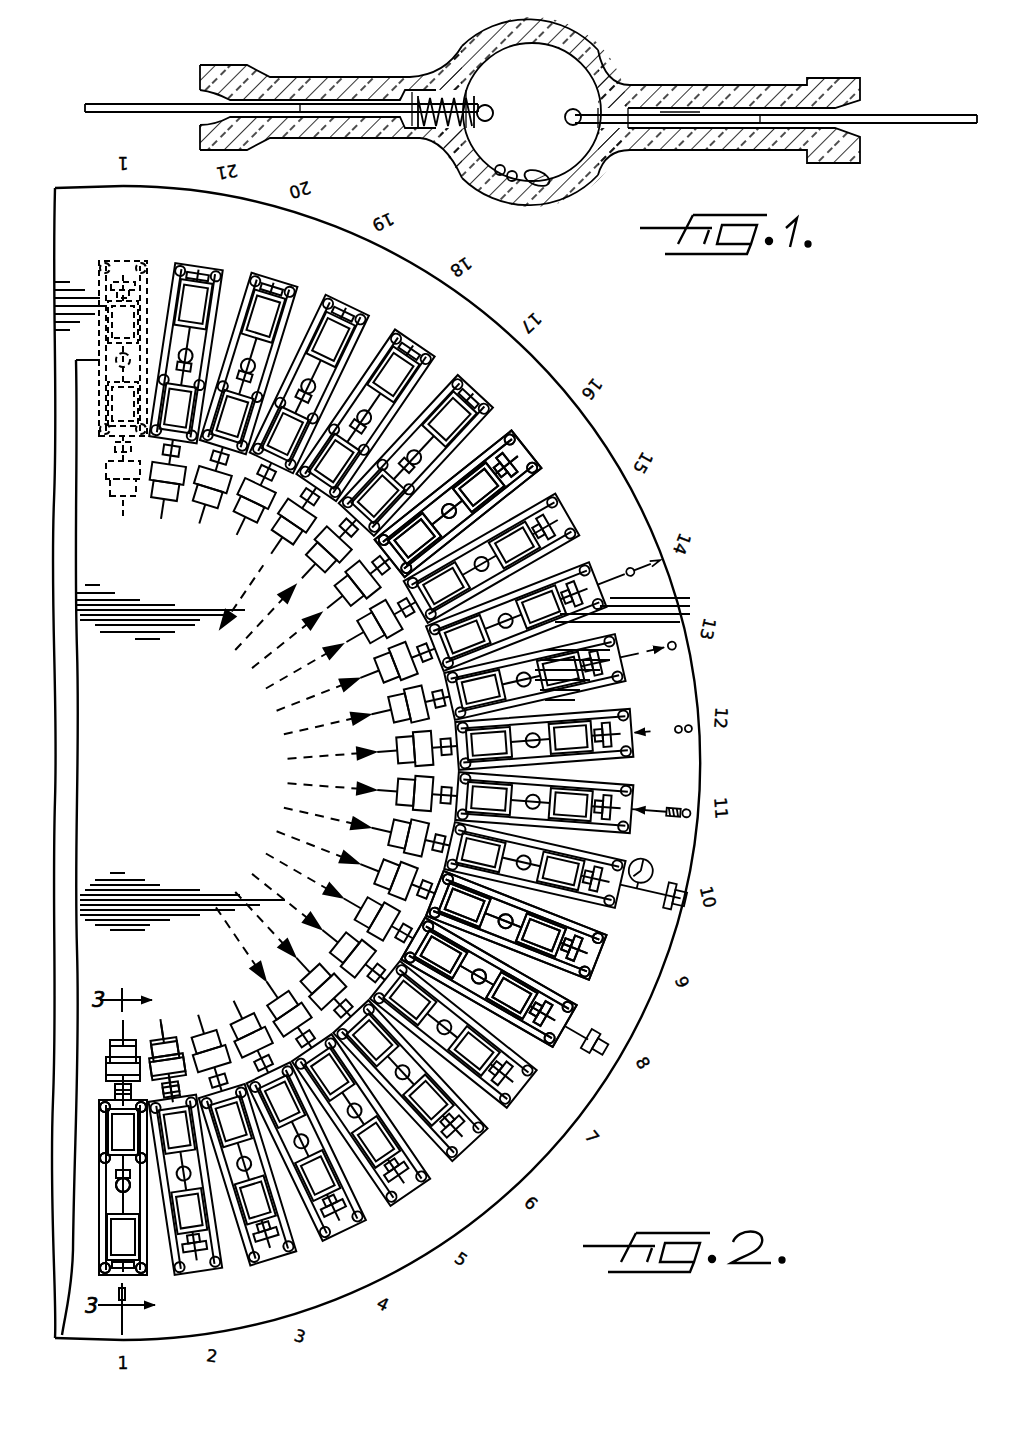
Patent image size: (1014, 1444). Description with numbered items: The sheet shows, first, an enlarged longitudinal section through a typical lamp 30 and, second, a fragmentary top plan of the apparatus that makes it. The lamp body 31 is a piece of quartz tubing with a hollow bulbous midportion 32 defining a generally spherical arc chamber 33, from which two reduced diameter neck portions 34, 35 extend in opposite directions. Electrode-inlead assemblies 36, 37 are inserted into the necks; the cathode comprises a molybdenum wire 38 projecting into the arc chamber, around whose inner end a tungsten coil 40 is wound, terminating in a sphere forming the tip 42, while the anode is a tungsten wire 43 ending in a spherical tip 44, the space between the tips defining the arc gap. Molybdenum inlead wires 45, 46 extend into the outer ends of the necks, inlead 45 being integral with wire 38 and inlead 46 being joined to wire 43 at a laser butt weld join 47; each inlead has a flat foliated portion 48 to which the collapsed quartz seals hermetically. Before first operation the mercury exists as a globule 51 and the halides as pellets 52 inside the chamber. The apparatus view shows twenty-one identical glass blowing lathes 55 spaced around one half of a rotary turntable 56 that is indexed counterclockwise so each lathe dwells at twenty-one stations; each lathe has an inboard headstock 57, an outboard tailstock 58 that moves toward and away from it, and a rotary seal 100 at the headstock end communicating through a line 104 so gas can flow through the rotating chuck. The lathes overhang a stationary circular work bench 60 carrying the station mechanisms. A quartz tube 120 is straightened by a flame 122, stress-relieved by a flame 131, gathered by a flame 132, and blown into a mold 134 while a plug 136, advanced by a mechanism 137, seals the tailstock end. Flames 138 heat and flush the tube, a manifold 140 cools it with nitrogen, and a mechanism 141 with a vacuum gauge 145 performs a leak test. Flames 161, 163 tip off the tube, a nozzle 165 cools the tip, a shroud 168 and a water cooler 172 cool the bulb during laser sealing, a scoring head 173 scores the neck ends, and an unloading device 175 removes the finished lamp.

In FIG. 1, the lamp 30 is at (235, 50).
In FIG. 1, the lamp body 31 is at (588, 30).
In FIG. 1, the bulbous midportion 32 is at (480, 34).
In FIG. 1, the arc chamber 33 is at (545, 106).
In FIG. 1, the neck portion 34 is at (330, 77).
In FIG. 1, the neck portion 35 is at (735, 88).
In FIG. 1, the electrode-inlead assembly 36 is at (410, 104).
In FIG. 2, the electrode-inlead assembly 36 is at (690, 808).
In FIG. 1, the electrode-inlead assembly 37 is at (660, 102).
In FIG. 2, the electrode-inlead assembly 37 is at (640, 565).
In FIG. 1, the molybdenum wire 38 is at (410, 128).
In FIG. 1, the coil 40 is at (487, 104).
In FIG. 1, the tip 42 is at (492, 122).
In FIG. 2, the tip 42 is at (715, 814).
In FIG. 1, the tungsten wire 43 is at (600, 112).
In FIG. 1, the tip 44 is at (572, 126).
In FIG. 2, the tip 44 is at (612, 580).
In FIG. 1, the inlead wire 45 is at (128, 106).
In FIG. 2, the inlead wire 45 is at (646, 810).
In FIG. 1, the inlead wire 46 is at (900, 116).
In FIG. 2, the inlead wire 46 is at (668, 565).
In FIG. 1, the join 47 is at (655, 118).
In FIG. 1, the foliated portion 48 is at (300, 105).
In FIG. 1, the globule 51 is at (538, 186).
In FIG. 2, the globule 51 is at (676, 642).
In FIG. 1, the pellets 52 is at (500, 178).
In FIG. 2, the pellets 52 is at (690, 715).
In FIG. 2, the glass blowing lathe 55 is at (548, 452).
In FIG. 2, the turntable 56 is at (186, 852).
In FIG. 2, the headstock 57 is at (118, 1135).
In FIG. 2, the tailstock 58 is at (112, 1232).
In FIG. 2, the work bench 60 is at (413, 1267).
In FIG. 2, the rotary seal 100 is at (390, 760).
In FIG. 2, the line 104 is at (208, 1040).
In FIG. 2, the quartz tube 120 is at (128, 1322).
In FIG. 2, the flame 122 is at (235, 1220).
In FIG. 2, the flame 131 is at (318, 1212).
In FIG. 2, the flame 132 is at (428, 1168).
In FIG. 2, the mold 134 is at (480, 1108).
In FIG. 2, the plug 136 is at (532, 1090).
In FIG. 2, the mechanism 137 is at (562, 1108).
In FIG. 2, the flames 138 is at (558, 960).
In FIG. 2, the manifold 140 is at (598, 916).
In FIG. 2, the mechanism 141 is at (680, 897).
In FIG. 2, the vacuum gauge 145 is at (662, 866).
In FIG. 2, the flame 161 is at (535, 500).
In FIG. 2, the flame 163 is at (492, 445).
In FIG. 2, the nozzle 165 is at (462, 402).
In FIG. 2, the shroud 168 is at (378, 335).
In FIG. 2, the water cooler 172 is at (330, 352).
In FIG. 2, the scoring head 173 is at (266, 350).
In FIG. 2, the unloading device 175 is at (210, 345).